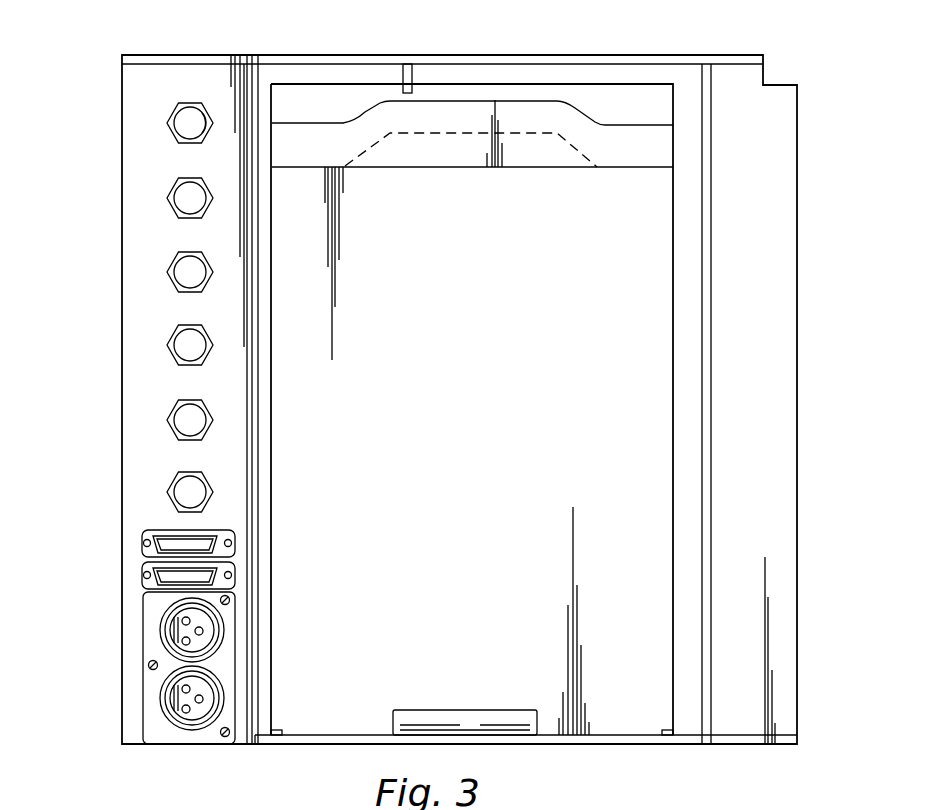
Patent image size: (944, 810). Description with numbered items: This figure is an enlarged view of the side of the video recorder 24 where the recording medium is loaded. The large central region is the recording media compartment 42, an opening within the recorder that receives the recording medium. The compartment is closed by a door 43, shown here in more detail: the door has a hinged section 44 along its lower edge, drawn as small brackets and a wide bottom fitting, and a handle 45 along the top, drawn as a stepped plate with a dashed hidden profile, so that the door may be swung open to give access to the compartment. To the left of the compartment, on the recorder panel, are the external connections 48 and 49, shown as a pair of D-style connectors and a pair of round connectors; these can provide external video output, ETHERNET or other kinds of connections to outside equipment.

The video recorder 24 is at (146, 52).
The recording media compartment 42 is at (667, 262).
The door 43 is at (474, 366).
The hinged section 44 is at (277, 745).
The handle 45 is at (538, 113).
The external connection 48 is at (140, 552).
The external connection 49 is at (148, 672).